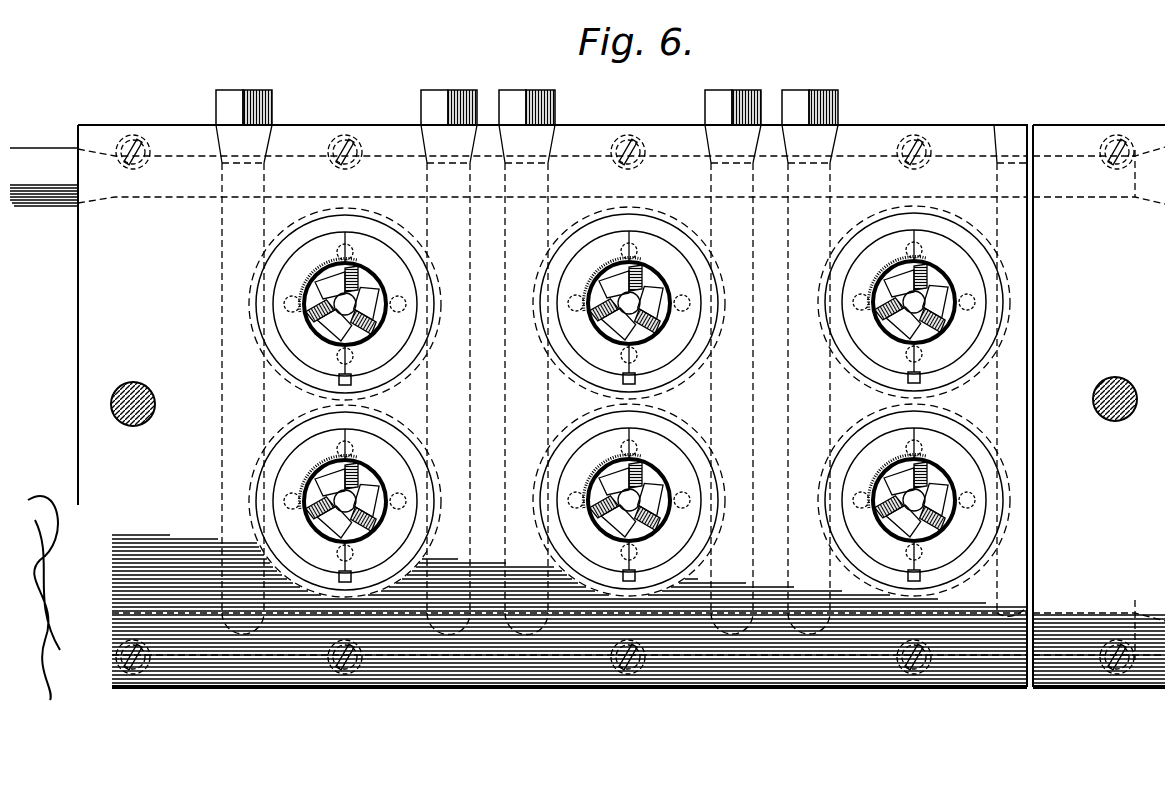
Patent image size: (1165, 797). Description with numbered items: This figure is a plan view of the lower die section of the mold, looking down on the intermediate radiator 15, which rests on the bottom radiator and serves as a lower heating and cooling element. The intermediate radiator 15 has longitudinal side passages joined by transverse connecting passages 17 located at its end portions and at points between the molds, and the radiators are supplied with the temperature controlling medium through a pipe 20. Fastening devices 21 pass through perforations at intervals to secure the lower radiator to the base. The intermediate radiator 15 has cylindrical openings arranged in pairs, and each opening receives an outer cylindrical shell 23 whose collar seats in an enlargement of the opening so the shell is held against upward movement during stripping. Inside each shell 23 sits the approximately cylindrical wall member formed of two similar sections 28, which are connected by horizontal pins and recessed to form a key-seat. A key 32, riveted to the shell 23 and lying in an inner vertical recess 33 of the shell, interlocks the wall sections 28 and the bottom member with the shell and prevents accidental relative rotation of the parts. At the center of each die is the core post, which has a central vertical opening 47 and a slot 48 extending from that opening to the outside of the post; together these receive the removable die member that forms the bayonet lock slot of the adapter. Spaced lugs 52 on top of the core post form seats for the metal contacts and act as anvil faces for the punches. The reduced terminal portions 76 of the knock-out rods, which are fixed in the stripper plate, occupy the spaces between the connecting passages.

The intermediate radiator 15 is at (78, 363).
The transverse connecting passages 17 is at (222, 476).
The pipe 20 is at (38, 150).
The fastening devices 21 is at (359, 677).
The outer cylindrical shell 23 is at (306, 226).
The sections of the wall member 28 is at (580, 528).
The key 32 is at (350, 572).
The inner vertical recess 33 is at (342, 572).
The central vertical opening 47 is at (616, 489).
The slot 48 is at (655, 497).
The spaced lugs 52 is at (325, 285).
The reduced terminal portion of knock-out rod 76 is at (120, 424).